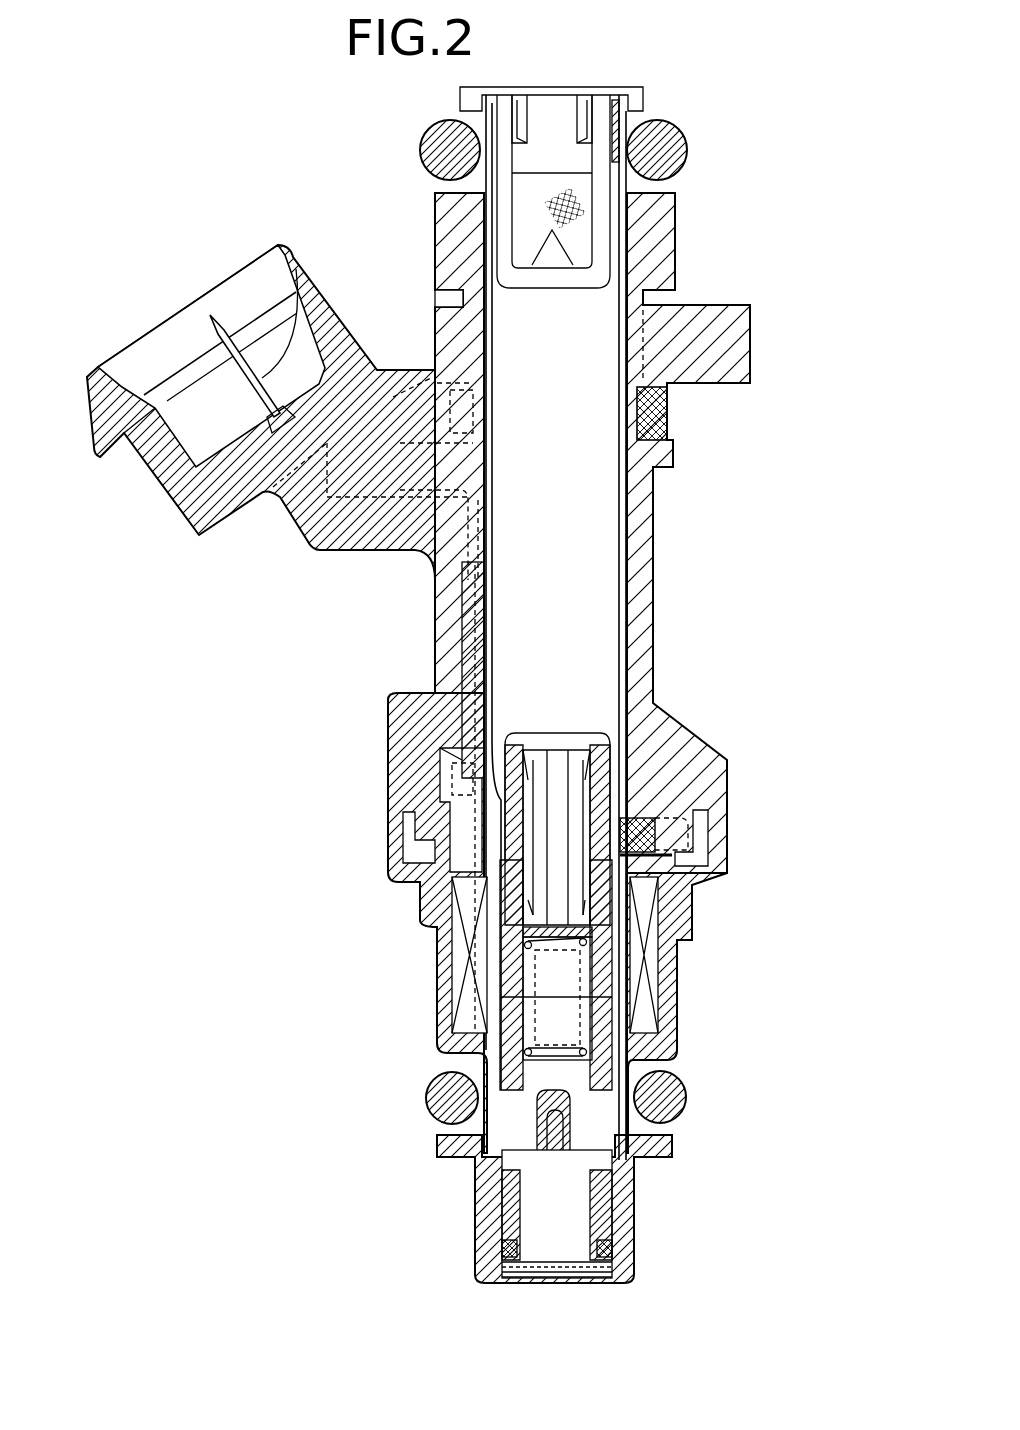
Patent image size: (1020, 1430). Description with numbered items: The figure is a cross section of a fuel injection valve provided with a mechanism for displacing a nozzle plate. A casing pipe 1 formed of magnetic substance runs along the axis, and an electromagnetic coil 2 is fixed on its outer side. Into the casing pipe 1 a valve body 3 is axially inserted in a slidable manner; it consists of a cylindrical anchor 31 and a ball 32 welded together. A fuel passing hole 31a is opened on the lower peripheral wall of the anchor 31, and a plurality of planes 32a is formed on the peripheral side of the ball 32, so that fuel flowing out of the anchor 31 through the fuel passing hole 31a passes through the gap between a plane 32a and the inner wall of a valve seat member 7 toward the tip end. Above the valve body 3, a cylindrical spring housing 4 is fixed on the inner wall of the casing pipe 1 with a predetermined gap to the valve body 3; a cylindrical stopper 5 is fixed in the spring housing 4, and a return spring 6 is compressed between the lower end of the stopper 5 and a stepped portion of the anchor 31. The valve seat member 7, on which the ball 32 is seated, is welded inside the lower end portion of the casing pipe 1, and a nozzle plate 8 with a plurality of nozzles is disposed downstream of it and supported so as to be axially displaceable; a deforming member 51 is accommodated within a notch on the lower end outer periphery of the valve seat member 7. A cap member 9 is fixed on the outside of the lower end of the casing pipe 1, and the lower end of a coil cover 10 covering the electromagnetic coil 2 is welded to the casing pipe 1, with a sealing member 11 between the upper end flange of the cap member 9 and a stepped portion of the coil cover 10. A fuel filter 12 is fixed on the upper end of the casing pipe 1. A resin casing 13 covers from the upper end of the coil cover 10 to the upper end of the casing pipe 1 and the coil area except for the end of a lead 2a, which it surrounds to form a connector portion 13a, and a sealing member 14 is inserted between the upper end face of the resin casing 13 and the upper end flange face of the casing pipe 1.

The casing pipe 1 is at (627, 563).
The electromagnetic coil 2 is at (467, 1000).
The lead 2a is at (312, 335).
The valve body 3 is at (537, 1102).
The spring housing 4 is at (507, 880).
The stopper 5 is at (527, 817).
The return spring 6 is at (507, 950).
The valve seat member 7 is at (507, 1218).
The nozzle plate 8 is at (538, 1270).
The cap member 9 is at (630, 1200).
The coil cover 10 is at (670, 977).
The sealing member 11 is at (667, 1093).
The fuel filter 12 is at (602, 178).
The resin casing 13 is at (643, 640).
The connector portion 13a is at (237, 402).
The sealing member 14 is at (678, 160).
The anchor 31 is at (557, 1054).
The fuel passing hole 31a is at (560, 1130).
The ball 32 is at (543, 1181).
The plane 32a is at (582, 1228).
The deforming member 51 is at (507, 1237).